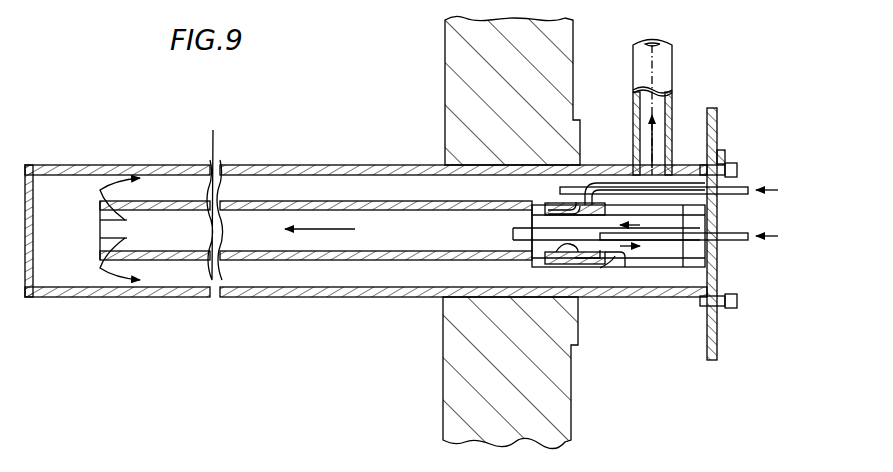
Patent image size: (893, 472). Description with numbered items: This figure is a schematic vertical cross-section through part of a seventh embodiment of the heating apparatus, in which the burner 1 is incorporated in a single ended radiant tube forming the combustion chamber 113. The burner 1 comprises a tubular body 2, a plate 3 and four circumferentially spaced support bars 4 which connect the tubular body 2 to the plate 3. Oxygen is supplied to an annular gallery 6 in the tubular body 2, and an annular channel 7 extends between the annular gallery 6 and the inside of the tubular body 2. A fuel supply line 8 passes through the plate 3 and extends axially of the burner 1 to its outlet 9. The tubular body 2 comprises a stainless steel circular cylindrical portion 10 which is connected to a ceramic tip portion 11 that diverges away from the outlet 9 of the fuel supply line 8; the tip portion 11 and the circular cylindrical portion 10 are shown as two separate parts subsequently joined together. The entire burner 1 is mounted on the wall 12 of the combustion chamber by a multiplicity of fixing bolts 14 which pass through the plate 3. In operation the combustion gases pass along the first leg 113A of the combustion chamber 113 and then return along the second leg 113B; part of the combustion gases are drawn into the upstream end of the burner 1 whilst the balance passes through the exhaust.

The burner 1 is at (548, 286).
The tubular body 2 is at (576, 188).
The plate 3 is at (720, 216).
The support bars 4 is at (683, 262).
The annular gallery 6 is at (552, 208).
The annular channel 7 is at (640, 268).
The fuel supply line 8 is at (736, 242).
The outlet 9 is at (512, 234).
The circular cylindrical portion 10 is at (572, 258).
The ceramic tip portion 11 is at (500, 257).
The wall 12 is at (718, 124).
The fixing bolts 14 is at (737, 170).
The combustion chamber 113 is at (66, 247).
The first leg 113A is at (273, 240).
The second leg 113B is at (374, 199).